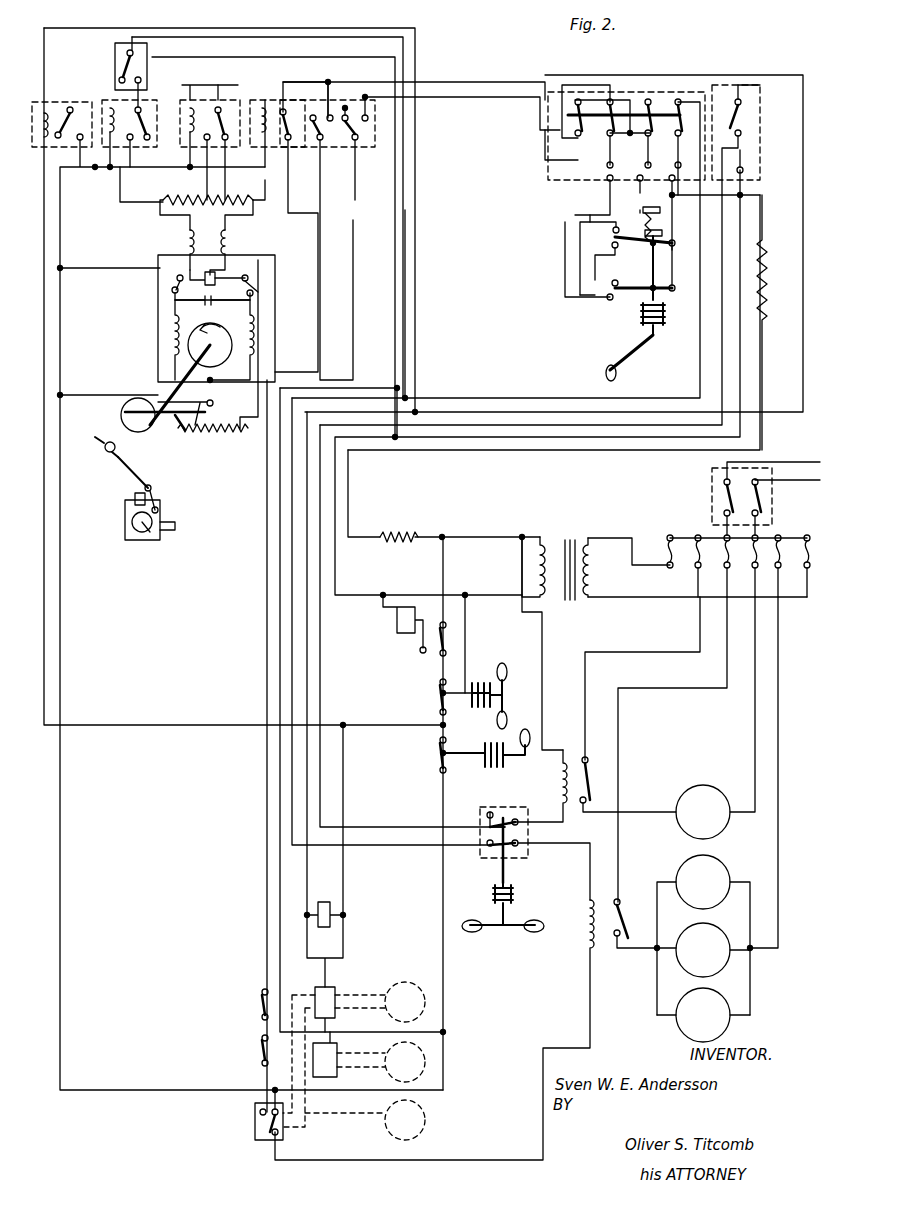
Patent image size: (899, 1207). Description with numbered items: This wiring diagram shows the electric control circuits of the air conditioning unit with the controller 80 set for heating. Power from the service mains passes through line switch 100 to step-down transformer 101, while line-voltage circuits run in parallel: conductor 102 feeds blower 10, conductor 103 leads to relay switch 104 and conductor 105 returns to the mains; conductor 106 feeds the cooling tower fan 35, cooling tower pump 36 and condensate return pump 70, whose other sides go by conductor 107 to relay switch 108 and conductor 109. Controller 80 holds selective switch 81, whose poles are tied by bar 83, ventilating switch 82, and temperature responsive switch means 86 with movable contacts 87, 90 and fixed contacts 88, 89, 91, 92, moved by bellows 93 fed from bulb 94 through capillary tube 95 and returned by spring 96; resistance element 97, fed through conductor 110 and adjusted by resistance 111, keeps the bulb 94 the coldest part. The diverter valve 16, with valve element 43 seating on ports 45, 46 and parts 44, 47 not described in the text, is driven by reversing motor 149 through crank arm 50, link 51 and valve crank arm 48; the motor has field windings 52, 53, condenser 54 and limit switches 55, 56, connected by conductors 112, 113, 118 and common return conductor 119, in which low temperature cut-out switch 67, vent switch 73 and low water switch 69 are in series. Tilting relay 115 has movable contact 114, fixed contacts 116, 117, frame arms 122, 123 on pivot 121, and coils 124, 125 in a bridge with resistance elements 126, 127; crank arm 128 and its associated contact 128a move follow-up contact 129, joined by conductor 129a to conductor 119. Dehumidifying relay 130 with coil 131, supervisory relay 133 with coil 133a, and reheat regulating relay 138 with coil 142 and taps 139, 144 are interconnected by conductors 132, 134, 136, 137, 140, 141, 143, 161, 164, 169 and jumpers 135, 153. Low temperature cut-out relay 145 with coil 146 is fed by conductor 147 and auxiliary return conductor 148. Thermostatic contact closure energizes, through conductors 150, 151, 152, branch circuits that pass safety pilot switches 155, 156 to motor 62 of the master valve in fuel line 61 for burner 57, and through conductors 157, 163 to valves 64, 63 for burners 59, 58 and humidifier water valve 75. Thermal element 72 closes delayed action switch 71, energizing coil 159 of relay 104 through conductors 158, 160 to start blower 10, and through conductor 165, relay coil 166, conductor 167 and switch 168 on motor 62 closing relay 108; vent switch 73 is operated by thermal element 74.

The blower 10 is at (718, 787).
The diverter valve 16 is at (122, 535).
The cooling tower fan 35 is at (728, 862).
The cooling tower pump 36 is at (730, 935).
The valve element 43 is at (142, 525).
The thermostat bellows 44 is at (135, 530).
The port 45 is at (165, 530).
The port 46 is at (133, 505).
The pivot 47 is at (158, 512).
The valve crank arm 48 is at (156, 505).
The crank arm 50 is at (100, 450).
The link 51 is at (130, 470).
The field winding 52 is at (260, 348).
The field winding 53 is at (170, 340).
The condenser 54 is at (212, 307).
The limit switch 55 is at (262, 285).
The limit switch 56 is at (170, 280).
The gas burner 57 is at (425, 1118).
The burner 58 is at (425, 1060).
The burner 59 is at (410, 982).
The fuel supply line 61 is at (252, 1130).
The electric motor 62 is at (258, 1143).
The control valve 63 is at (338, 1072).
The control valve 64 is at (337, 990).
The low temperature cut-out switch 67 is at (438, 762).
The low water cut-out unit 69 is at (428, 655).
The condensate return pump 70 is at (728, 992).
The delayed action control switch 71 is at (532, 832).
The thermal responsive element 72 is at (515, 895).
The vent switch 73 is at (438, 698).
The thermal responsive element 74 is at (505, 690).
The water valve 75 is at (322, 900).
The selective controller 80 is at (700, 55).
The four-pole double-throw selective switch 81 is at (545, 175).
The single-pole double-throw ventilating switch 82 is at (760, 130).
The bar 83 is at (565, 124).
The temperature responsive switch means 86 is at (598, 302).
The movable contact 87 is at (635, 300).
The fixed contact 88 is at (612, 305).
The fixed contact 89 is at (643, 280).
The movable contact 90 is at (640, 245).
The fixed contact 91 is at (606, 261).
The fixed contact 92 is at (648, 218).
The expansible bellows 93 is at (668, 312).
The bulb 94 is at (605, 374).
The capillary tube 95 is at (632, 360).
The spring 96 is at (664, 233).
The electric resistance element 97 is at (770, 280).
The line switch 100 is at (710, 488).
The step-down transformer 101 is at (578, 535).
The conductor 102 is at (755, 695).
The conductor 103 is at (640, 812).
The relay switch 104 is at (592, 775).
The conductor 105 is at (590, 722).
The conductor 106 is at (780, 785).
The conductor 107 is at (642, 950).
The relay switch 108 is at (625, 905).
The conductor 109 is at (620, 860).
The conductor 110 is at (765, 215).
The second resistance 111 is at (405, 525).
The conductor 112 is at (405, 325).
The conductor 113 is at (397, 388).
The movable contact 114 is at (210, 289).
The tilting relay 115 is at (236, 238).
The fixed contact 116 is at (225, 278).
The fixed contact 117 is at (200, 278).
The conductor 118 is at (85, 268).
The common return conductor 119 is at (62, 340).
The pivot 121 is at (209, 237).
The arm 122 is at (240, 222).
The arm 123 is at (180, 228).
The relay coil 124 is at (232, 250).
The relay coil 125 is at (183, 240).
The resistance element 126 is at (206, 215).
The resistance element 127 is at (230, 438).
The crank arm 128 is at (121, 414).
The contact 128a is at (185, 409).
The follow-up contact 129 is at (216, 347).
The conductor 129a is at (135, 395).
The dehumidifying relay 130 is at (378, 147).
The relay coil 131 is at (272, 143).
The conductor 132 is at (415, 313).
The supervisory relay 133 is at (110, 170).
The relay coil 133a is at (108, 108).
The conductor 134 is at (176, 85).
The jumper 135 is at (330, 57).
The conductor 136 is at (245, 37).
The conductor 137 is at (318, 213).
The reheat regulating relay 138 is at (190, 167).
The adjustable tap 139 is at (244, 178).
The conductor 140 is at (120, 202).
The conductor 141 is at (490, 97).
The relay coil 142 is at (195, 100).
The conductor 143 is at (500, 82).
The second tap 144 is at (192, 172).
The low temperature cut-out relay 145 is at (52, 100).
The relay coil 146 is at (40, 112).
The conductor 147 is at (420, 352).
The auxiliary return conductor 148 is at (60, 582).
The relay 149 is at (258, 318).
The conductor 150 is at (700, 225).
The conductor 151 is at (672, 280).
The conductor 152 is at (565, 258).
The jumper 153 is at (612, 131).
The safety pilot switch 155 is at (262, 1008).
The safety pilot switch 156 is at (262, 1052).
The conductor 157 is at (345, 875).
The conductor 158 is at (468, 655).
The coil 159 is at (565, 745).
The conductor 160 is at (545, 695).
The conductor 161 is at (570, 210).
The conductor 163 is at (378, 1032).
The conductor 164 is at (578, 228).
The conductor 165 is at (590, 880).
The relay coil 166 is at (586, 940).
The conductor 167 is at (560, 1048).
The switch 168 is at (300, 1127).
The conductor 169 is at (565, 283).